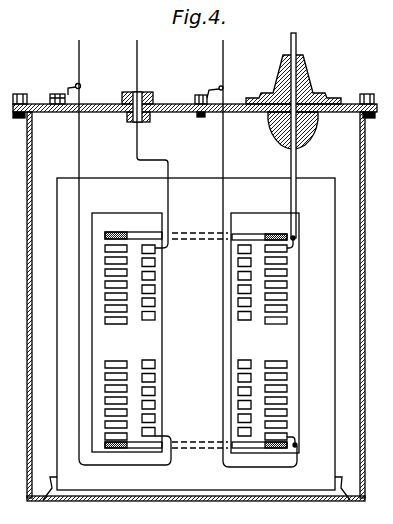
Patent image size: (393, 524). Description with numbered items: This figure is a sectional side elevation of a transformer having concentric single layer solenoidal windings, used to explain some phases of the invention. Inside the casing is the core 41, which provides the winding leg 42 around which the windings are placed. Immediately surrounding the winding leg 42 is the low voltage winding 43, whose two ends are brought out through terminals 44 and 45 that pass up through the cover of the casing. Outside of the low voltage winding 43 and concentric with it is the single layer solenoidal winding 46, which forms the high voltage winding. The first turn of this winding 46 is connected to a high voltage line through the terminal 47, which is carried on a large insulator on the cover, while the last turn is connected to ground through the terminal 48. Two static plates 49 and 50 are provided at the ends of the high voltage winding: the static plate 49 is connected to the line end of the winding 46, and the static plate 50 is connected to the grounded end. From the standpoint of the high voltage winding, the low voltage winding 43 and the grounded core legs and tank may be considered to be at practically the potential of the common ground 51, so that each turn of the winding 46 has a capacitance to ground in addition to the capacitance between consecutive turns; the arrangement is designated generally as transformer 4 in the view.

The battery housing / tank 4 is at (365, 252).
The core 41 is at (193, 178).
The winding leg 42 is at (202, 296).
The low voltage winding 43 is at (147, 320).
The terminal 44 is at (137, 72).
The terminal 45 is at (80, 58).
The single layer solenoidal winding 46 is at (277, 324).
The terminal 47 is at (296, 48).
The terminal 48 is at (223, 60).
The static plate 49 is at (250, 234).
The static plate 50 is at (280, 448).
The common ground 51 is at (197, 95).